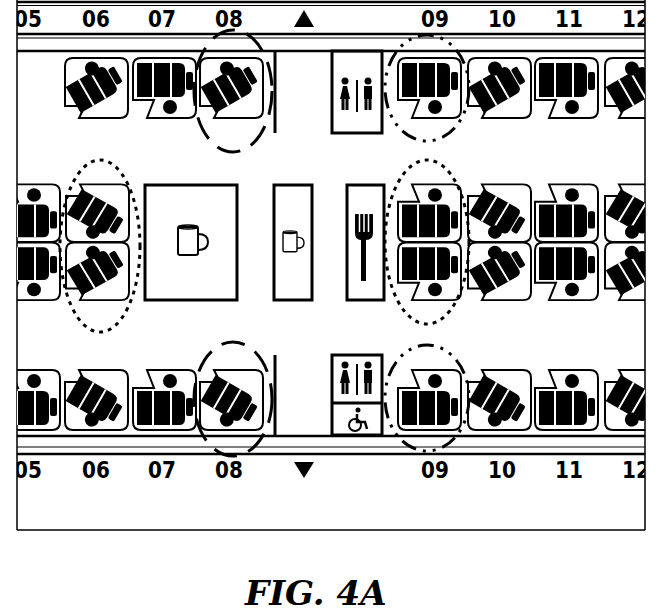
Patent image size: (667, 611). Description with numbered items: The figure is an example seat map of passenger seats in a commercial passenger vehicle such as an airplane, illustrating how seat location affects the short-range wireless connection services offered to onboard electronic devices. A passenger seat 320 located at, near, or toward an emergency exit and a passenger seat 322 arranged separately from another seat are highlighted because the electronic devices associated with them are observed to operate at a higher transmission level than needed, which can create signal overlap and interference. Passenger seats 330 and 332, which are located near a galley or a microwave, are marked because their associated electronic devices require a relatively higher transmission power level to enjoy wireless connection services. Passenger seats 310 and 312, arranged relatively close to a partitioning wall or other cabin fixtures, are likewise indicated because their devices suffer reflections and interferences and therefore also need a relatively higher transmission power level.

The passenger seat 310 is at (429, 128).
The passenger seat 312 is at (445, 362).
The passenger seat 320 is at (247, 149).
The passenger seat 322 is at (207, 345).
The passenger seat 330 is at (96, 160).
The passenger seat 332 is at (391, 308).